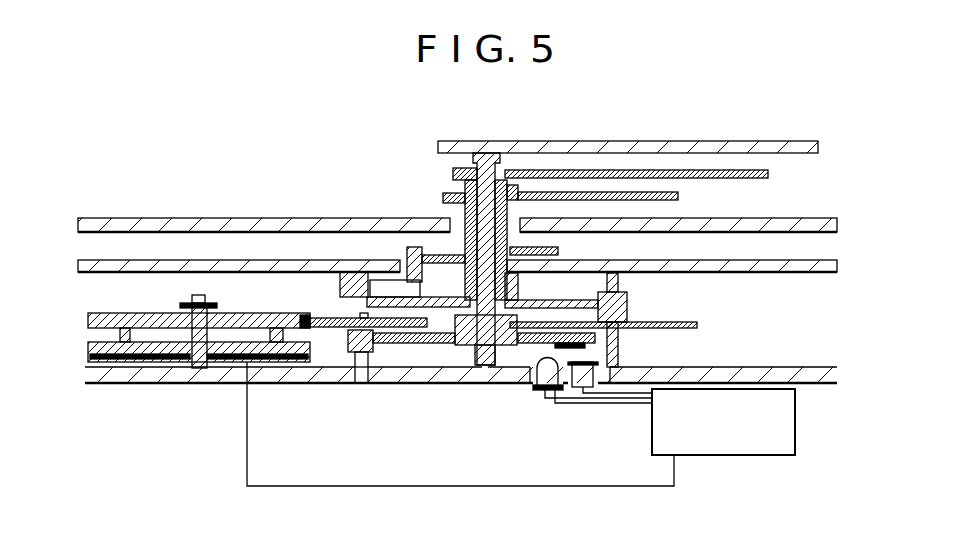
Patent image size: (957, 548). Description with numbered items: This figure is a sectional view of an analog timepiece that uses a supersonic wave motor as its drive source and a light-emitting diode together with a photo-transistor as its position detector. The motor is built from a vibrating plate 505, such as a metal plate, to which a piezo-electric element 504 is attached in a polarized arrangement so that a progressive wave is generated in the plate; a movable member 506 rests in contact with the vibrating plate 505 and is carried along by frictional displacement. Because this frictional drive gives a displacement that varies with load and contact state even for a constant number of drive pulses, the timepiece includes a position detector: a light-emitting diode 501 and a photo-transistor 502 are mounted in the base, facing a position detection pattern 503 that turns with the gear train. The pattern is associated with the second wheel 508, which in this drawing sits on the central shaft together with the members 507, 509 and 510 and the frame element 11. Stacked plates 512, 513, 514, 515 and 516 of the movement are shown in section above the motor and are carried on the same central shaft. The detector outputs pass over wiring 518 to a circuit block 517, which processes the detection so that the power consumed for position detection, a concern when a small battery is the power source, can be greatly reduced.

The lens barrel / frame member 11 is at (407, 252).
The LED 501 is at (540, 390).
The phototransistor 502 is at (583, 390).
The position detection pattern 503 is at (612, 350).
The piezo-electric element 504 is at (100, 383).
The vibrating plate 505 is at (155, 383).
The movable member 506 is at (243, 320).
The support block 507 is at (322, 345).
The second wheel 508 is at (458, 350).
The support post 509 is at (627, 300).
The hub member 510 is at (518, 292).
The plate 512 is at (558, 251).
The plate 513 is at (325, 220).
The top plate 514 is at (652, 141).
The plate 515 is at (768, 174).
The plate 516 is at (678, 196).
The control circuit 517 is at (748, 455).
The wire 518 is at (388, 488).